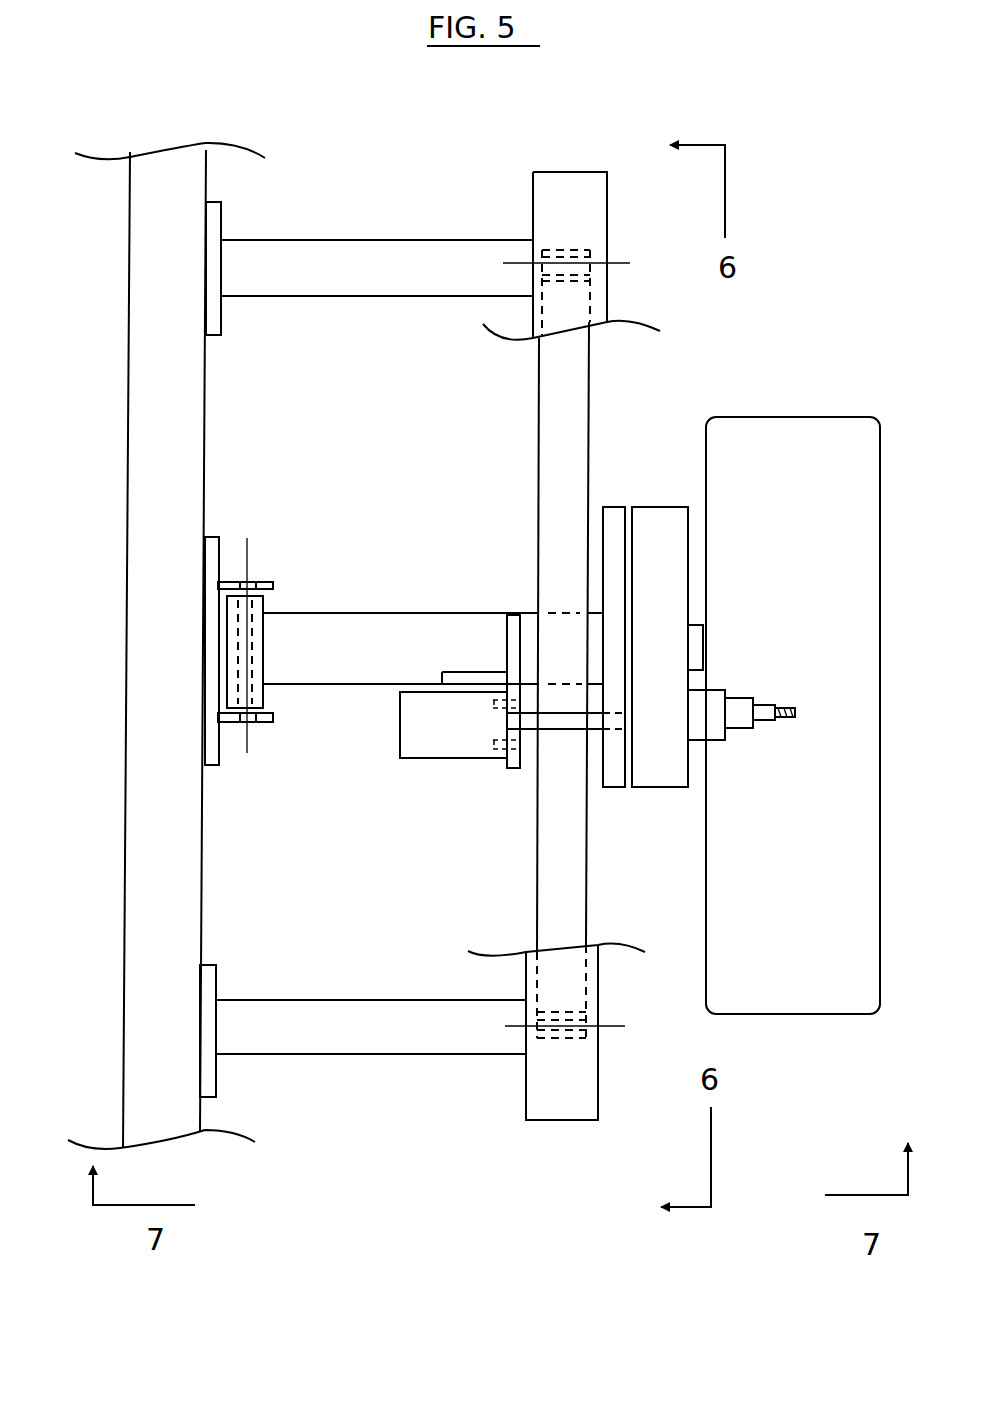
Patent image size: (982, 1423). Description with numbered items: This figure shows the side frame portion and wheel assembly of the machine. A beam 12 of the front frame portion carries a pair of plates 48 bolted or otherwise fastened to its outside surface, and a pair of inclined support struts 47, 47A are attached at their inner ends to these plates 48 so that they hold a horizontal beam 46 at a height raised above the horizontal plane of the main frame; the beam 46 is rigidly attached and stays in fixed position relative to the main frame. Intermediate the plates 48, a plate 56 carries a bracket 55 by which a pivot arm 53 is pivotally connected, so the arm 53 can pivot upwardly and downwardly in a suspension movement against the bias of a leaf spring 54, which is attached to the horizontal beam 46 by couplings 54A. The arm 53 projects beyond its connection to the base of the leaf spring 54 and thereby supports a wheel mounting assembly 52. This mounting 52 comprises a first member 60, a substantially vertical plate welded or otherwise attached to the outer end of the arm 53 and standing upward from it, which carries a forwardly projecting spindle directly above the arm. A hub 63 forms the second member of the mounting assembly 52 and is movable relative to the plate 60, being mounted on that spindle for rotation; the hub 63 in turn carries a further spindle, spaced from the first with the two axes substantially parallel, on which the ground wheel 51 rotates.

The beam 12 is at (203, 870).
The horizontal beam 46 is at (530, 208).
The inclined support strut 47 is at (373, 1000).
The inclined support strut 47A is at (375, 298).
The plate 48 is at (222, 312).
The ground wheel 51 is at (822, 428).
The wheel mounting assembly 52 is at (636, 490).
The pivot arm 53 is at (343, 613).
The leaf spring 54 is at (538, 427).
The coupling 54A is at (613, 218).
The bracket 55 is at (253, 580).
The plate 56 is at (218, 537).
The first member 60 is at (612, 793).
The hub 63 is at (658, 506).